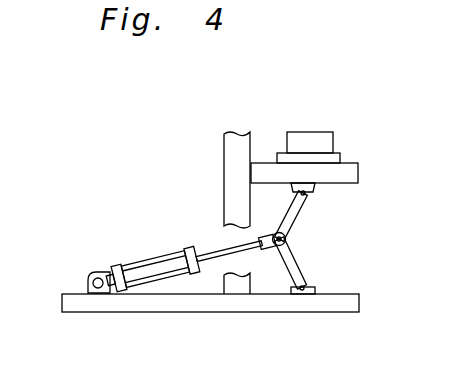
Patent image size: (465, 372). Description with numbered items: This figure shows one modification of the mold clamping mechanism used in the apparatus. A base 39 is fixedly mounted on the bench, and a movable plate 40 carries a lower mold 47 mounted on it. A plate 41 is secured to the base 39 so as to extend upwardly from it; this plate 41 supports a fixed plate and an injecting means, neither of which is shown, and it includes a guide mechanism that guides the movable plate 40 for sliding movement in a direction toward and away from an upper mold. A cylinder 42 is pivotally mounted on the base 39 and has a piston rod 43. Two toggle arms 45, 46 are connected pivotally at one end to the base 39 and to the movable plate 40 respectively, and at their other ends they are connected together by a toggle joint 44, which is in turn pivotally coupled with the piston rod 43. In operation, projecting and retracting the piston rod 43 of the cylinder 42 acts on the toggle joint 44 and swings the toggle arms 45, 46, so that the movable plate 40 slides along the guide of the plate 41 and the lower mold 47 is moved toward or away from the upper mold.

The base 39 is at (340, 306).
The movable plate 40 is at (345, 175).
The plate 41 is at (237, 168).
The cylinder 42 is at (150, 263).
The piston rod 43 is at (220, 250).
The toggle joint 44 is at (286, 238).
The toggle arm 45 is at (295, 265).
The toggle arm 46 is at (310, 213).
The lower mold 47 is at (315, 138).